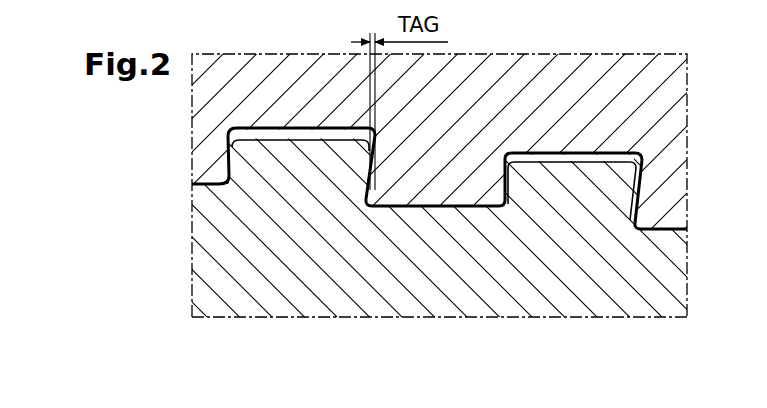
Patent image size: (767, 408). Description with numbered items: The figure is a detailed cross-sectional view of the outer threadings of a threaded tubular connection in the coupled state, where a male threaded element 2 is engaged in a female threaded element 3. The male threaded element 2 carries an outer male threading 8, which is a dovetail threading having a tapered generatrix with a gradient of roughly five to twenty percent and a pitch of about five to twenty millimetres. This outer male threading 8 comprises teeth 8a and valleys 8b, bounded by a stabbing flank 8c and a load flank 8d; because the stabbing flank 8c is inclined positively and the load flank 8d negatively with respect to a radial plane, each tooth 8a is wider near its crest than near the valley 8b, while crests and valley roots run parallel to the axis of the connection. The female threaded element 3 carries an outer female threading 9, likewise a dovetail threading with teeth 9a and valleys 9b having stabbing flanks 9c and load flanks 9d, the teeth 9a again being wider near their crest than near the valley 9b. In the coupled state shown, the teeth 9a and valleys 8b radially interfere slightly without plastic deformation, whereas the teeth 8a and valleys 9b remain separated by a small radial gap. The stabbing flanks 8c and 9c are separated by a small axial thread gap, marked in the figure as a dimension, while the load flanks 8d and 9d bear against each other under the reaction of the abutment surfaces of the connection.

The male threaded element 2 is at (357, 320).
The female threaded element 3 is at (688, 92).
The outer male threading 8 is at (302, 186).
The teeth 8a is at (569, 165).
The valleys 8b is at (436, 206).
The stabbing flank 8c is at (371, 200).
The load flank 8d is at (512, 194).
The outer female threading 9 is at (444, 164).
The teeth 9a is at (660, 231).
The valleys 9b is at (568, 157).
The stabbing flank 9c is at (366, 160).
The load flank 9d is at (485, 207).